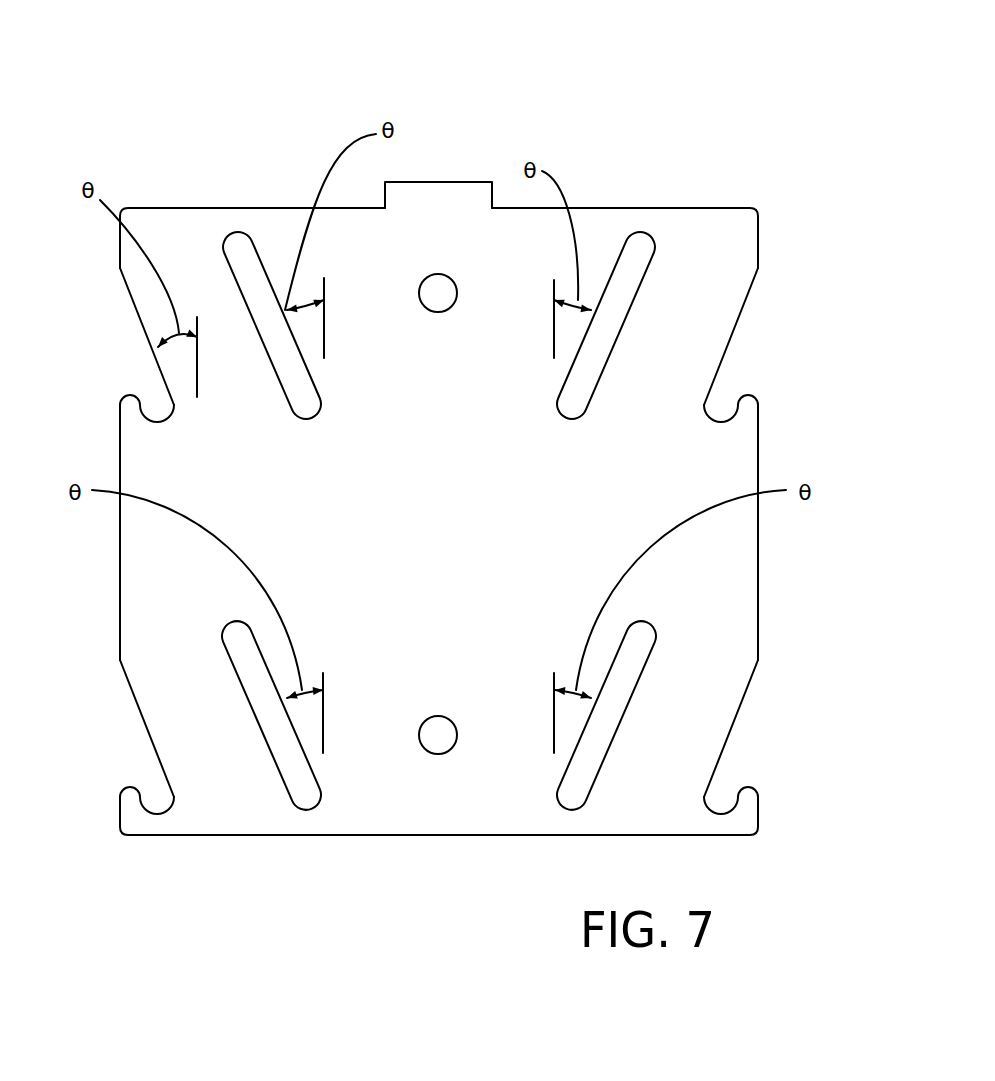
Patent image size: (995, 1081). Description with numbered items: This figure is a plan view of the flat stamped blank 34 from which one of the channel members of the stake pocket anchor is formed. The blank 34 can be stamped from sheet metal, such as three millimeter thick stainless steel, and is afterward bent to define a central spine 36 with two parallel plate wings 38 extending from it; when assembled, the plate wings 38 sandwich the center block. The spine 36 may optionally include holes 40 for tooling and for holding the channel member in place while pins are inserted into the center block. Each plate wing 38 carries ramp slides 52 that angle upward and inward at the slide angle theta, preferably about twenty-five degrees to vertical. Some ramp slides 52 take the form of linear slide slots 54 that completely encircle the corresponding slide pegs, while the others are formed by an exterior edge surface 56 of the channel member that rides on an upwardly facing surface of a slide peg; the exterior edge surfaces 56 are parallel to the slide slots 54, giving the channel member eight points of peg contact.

The blank 34 is at (541, 106).
The spine 36 is at (411, 190).
The parallel plate wings 38 is at (168, 237).
The holes 40 is at (435, 292).
The ramp slides 52 is at (258, 287).
The slide slots 54 is at (305, 297).
The exterior edge surface 56 is at (158, 330).